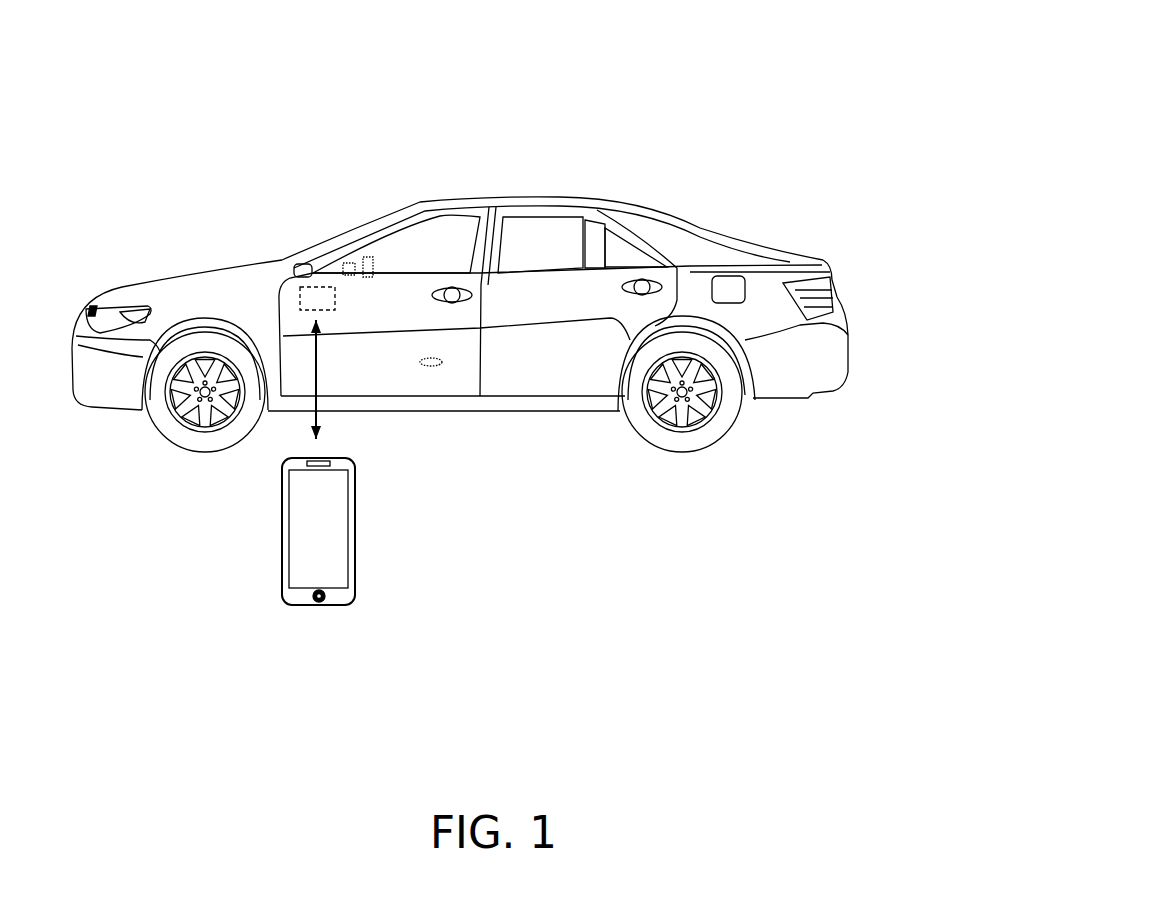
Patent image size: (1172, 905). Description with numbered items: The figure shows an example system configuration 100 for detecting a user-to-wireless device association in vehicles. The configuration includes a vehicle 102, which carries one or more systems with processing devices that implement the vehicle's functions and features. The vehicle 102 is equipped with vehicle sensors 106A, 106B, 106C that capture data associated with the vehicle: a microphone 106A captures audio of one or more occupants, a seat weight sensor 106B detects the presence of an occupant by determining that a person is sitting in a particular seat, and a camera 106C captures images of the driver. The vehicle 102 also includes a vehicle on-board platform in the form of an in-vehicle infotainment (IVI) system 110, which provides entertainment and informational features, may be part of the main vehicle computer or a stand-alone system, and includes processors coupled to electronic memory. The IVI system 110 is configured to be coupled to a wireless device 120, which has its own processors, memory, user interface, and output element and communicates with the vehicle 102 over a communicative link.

The system configuration 100 is at (1063, 47).
The vehicle 102 is at (751, 241).
The microphone 106A is at (349, 273).
The seat weight sensor 106B is at (433, 369).
The camera 106C is at (367, 263).
The in-vehicle infotainment (IVI) system 110 is at (307, 295).
The wireless device 120 is at (319, 566).